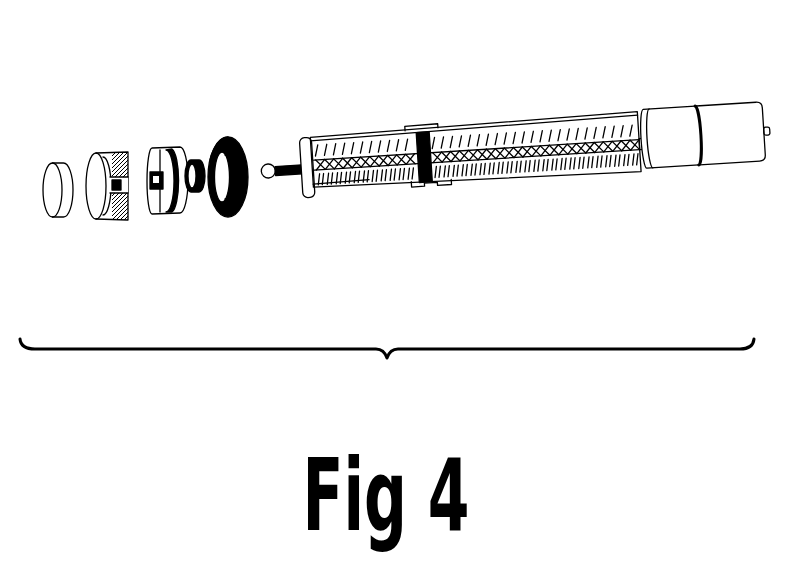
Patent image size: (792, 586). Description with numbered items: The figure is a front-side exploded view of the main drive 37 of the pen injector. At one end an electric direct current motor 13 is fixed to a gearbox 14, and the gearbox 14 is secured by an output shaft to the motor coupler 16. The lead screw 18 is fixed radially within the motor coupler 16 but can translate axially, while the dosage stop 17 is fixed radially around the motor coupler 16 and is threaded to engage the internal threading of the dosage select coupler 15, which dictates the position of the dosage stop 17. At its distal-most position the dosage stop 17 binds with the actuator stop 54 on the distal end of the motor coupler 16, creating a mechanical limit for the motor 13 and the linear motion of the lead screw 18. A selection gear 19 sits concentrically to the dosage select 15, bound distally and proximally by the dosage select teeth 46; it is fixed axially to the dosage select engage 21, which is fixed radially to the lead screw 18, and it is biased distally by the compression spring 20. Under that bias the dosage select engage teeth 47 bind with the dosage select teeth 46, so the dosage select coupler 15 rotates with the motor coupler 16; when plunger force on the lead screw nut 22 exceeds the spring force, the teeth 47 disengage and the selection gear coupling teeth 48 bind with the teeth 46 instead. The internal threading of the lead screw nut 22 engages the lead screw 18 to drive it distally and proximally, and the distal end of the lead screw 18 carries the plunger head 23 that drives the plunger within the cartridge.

The DC motor 13 is at (713, 103).
The gearbox 14 is at (663, 109).
The dosage select coupler 15 is at (300, 198).
The motor coupler 16 is at (463, 177).
The dosage stop 17 is at (423, 134).
The lead screw 18 is at (272, 162).
The selection gear 19 is at (221, 136).
The compression spring 20 is at (193, 161).
The dosage select engage 21 is at (145, 203).
The lead screw nut 22 is at (105, 148).
The plunger head 23 is at (53, 148).
The main drive 37 is at (387, 364).
The dosage select teeth 46 is at (332, 135).
The dosage select engage teeth 47 is at (172, 209).
The selection gear coupling teeth 48 is at (234, 135).
The actuator stop 54 is at (317, 188).